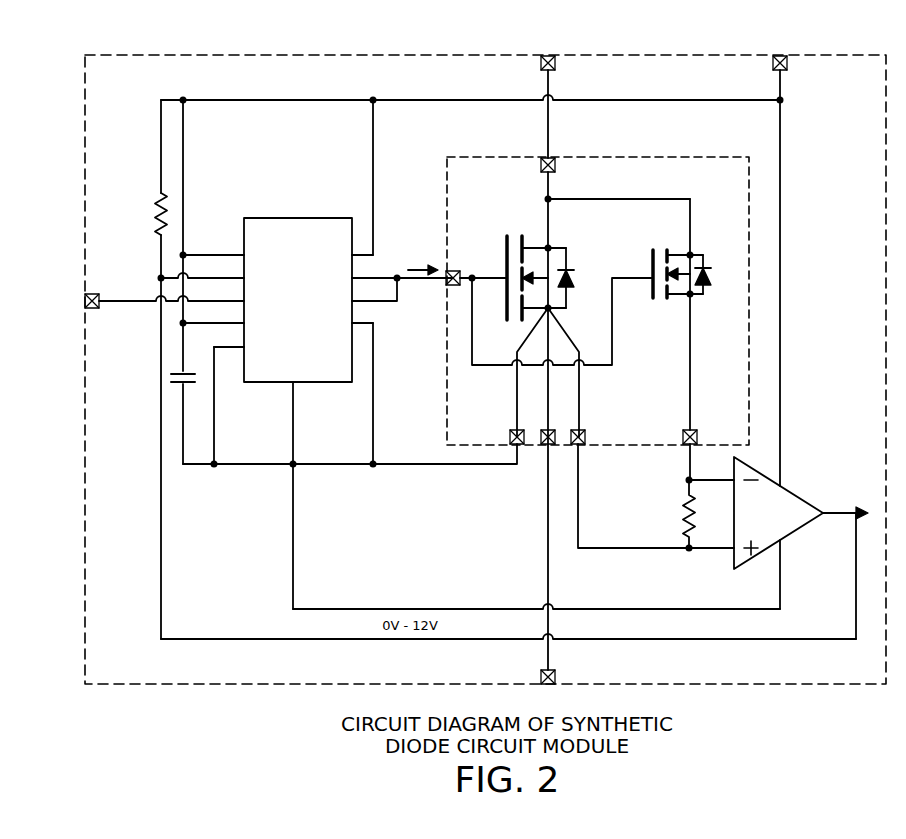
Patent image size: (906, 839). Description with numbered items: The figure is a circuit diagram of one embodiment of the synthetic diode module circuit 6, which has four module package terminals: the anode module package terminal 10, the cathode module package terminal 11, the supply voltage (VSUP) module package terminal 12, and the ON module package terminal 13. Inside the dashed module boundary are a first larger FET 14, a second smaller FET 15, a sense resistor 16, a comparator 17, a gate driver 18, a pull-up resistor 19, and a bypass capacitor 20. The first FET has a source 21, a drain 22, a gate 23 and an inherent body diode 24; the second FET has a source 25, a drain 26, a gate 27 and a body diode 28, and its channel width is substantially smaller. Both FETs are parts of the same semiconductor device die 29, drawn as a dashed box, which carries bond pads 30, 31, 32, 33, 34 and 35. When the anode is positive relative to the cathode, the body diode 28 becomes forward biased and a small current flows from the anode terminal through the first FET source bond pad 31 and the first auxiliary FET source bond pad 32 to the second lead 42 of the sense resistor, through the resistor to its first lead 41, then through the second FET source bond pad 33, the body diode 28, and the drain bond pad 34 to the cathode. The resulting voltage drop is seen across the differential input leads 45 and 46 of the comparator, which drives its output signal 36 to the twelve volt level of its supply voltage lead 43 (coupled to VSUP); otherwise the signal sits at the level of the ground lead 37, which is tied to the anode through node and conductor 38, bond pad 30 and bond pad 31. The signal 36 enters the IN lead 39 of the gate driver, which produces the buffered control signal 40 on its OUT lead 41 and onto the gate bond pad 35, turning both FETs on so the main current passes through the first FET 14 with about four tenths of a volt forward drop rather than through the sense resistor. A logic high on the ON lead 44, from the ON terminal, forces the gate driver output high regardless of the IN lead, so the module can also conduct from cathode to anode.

The synthetic diode module circuit 6 is at (224, 55).
The anode module package terminal 10 is at (556, 675).
The cathode module package terminal 11 is at (556, 65).
The supply voltage module package terminal 12 is at (788, 65).
The ON module package terminal 13 is at (100, 296).
The first larger FET 14 is at (554, 307).
The second smaller FET 15 is at (656, 263).
The sense resistor 16 is at (682, 508).
The comparator 17 is at (763, 499).
The gate driver 18 is at (297, 218).
The pull-up resistor 19 is at (152, 214).
The bypass capacitor 20 is at (188, 374).
The source lead of first FET 21 is at (546, 308).
The drain lead of first FET 22 is at (552, 249).
The gate lead of first FET 23 is at (505, 278).
The body diode of first FET 24 is at (575, 280).
The source lead of second FET 25 is at (692, 300).
The drain lead of second FET 26 is at (693, 255).
The gate lead of second FET 27 is at (650, 276).
The body diode of second FET 28 is at (712, 277).
The semiconductor device die 29 is at (628, 158).
The bond pad 30 is at (508, 437).
The first FET source bond pad 31 is at (552, 431).
The first auxiliary FET source bond pad 32 is at (586, 437).
The second FET source bond pad 33 is at (698, 437).
The drain bond pad 34 is at (556, 167).
The gate bond pad 35 is at (458, 271).
The comparator output signal 36 is at (851, 505).
The comparator ground lead 37 is at (783, 551).
The node and conductor 38 is at (327, 463).
The IN input lead of gate driver 39 is at (228, 282).
The buffered control signal 40 is at (418, 270).
The OUT lead of gate driver 41 is at (379, 276).
The second lead of sense resistor 42 is at (689, 539).
The supply voltage lead of comparator 43 is at (781, 482).
The ON lead of gate driver 44 is at (228, 305).
The differential input lead of comparator 45 is at (727, 481).
The differential input lead of comparator 46 is at (727, 550).